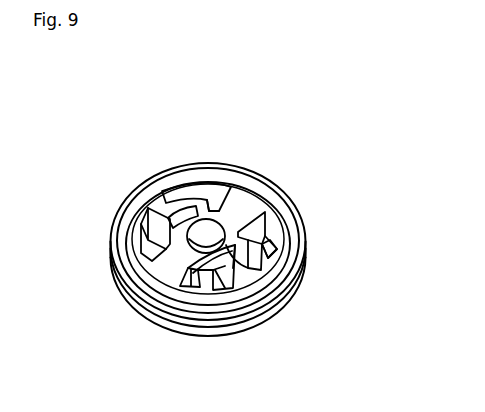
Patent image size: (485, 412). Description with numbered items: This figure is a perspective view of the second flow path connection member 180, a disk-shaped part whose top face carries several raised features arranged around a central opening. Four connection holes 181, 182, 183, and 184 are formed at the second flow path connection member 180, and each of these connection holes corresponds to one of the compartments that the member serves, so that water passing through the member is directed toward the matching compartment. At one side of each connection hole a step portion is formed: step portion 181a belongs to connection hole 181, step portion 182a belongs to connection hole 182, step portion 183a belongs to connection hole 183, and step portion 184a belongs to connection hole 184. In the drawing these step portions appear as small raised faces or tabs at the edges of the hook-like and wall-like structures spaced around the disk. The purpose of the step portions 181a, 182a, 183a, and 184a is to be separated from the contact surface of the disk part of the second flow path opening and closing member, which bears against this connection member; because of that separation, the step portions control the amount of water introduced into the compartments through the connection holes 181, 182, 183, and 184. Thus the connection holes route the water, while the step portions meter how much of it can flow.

The second flow path connection member 180 is at (226, 66).
The connection hole 181 is at (192, 280).
The step portion 181a is at (221, 262).
The connection hole 182 is at (276, 232).
The step portion 182a is at (279, 251).
The connection hole 183 is at (222, 188).
The step portion 183a is at (213, 209).
The connection hole 184 is at (143, 247).
The step portion 184a is at (173, 225).